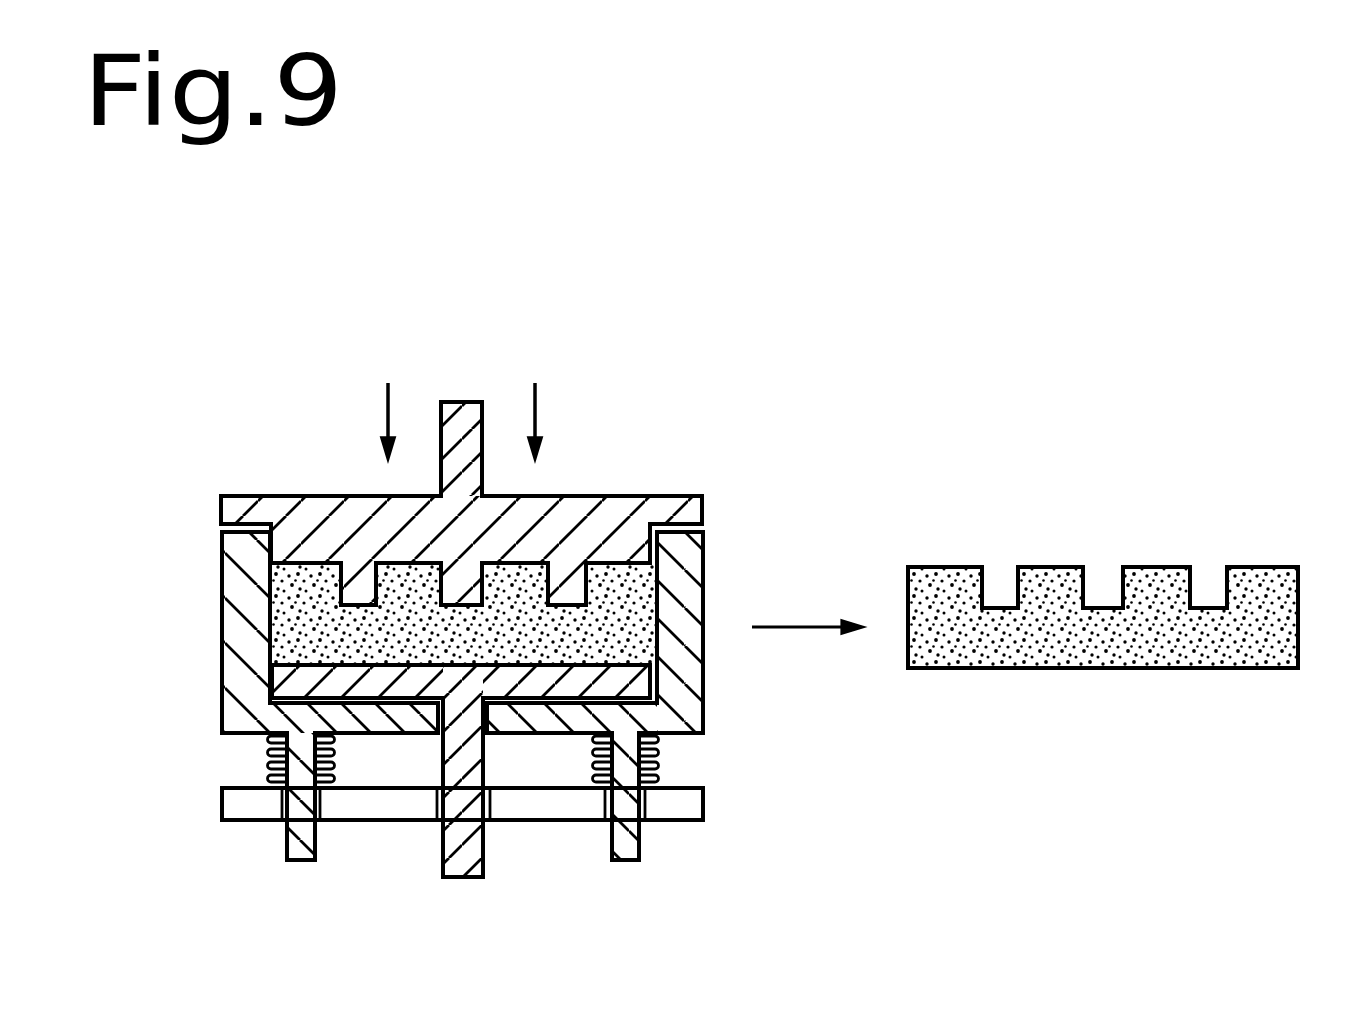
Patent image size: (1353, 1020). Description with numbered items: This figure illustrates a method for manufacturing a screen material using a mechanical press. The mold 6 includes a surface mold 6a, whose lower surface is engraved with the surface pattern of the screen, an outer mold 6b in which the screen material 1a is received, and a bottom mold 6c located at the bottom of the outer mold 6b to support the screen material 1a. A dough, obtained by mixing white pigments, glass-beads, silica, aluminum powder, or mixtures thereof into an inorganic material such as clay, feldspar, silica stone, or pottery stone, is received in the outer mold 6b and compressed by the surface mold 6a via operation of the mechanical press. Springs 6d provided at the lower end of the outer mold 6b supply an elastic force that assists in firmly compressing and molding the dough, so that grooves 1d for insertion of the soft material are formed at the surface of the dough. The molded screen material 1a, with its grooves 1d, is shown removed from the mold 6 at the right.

The mold 6 is at (200, 497).
The surface mold 6a is at (612, 520).
The outer mold 6b is at (685, 589).
The bottom mold 6c is at (637, 682).
The springs 6d is at (653, 763).
The screen material 1a is at (1153, 645).
The grooves 1d is at (987, 605).